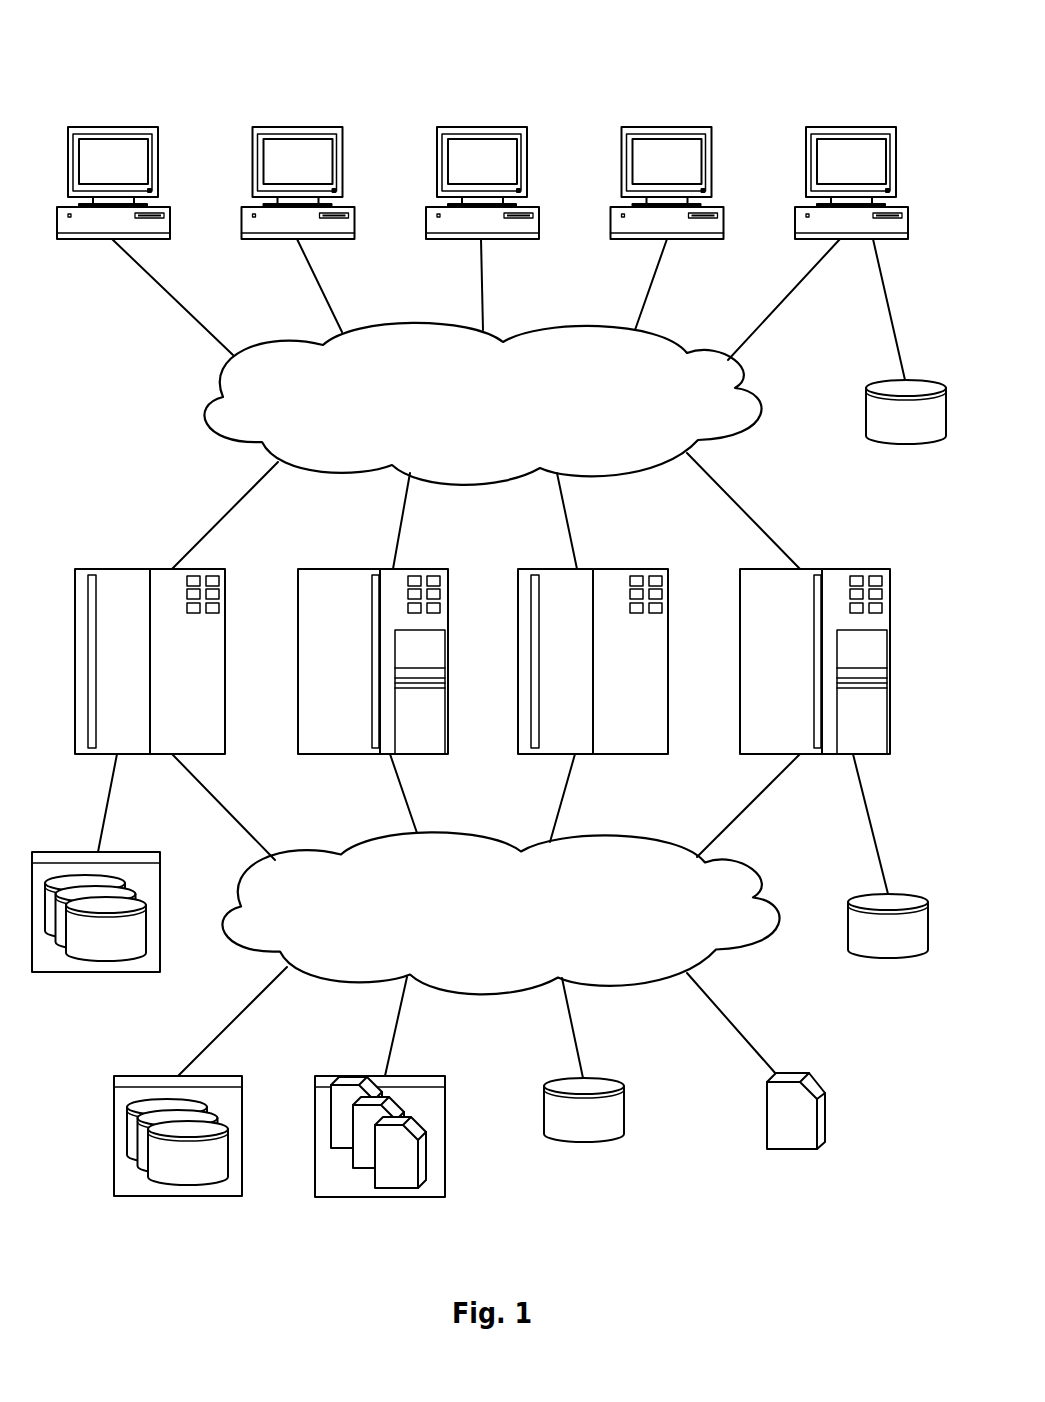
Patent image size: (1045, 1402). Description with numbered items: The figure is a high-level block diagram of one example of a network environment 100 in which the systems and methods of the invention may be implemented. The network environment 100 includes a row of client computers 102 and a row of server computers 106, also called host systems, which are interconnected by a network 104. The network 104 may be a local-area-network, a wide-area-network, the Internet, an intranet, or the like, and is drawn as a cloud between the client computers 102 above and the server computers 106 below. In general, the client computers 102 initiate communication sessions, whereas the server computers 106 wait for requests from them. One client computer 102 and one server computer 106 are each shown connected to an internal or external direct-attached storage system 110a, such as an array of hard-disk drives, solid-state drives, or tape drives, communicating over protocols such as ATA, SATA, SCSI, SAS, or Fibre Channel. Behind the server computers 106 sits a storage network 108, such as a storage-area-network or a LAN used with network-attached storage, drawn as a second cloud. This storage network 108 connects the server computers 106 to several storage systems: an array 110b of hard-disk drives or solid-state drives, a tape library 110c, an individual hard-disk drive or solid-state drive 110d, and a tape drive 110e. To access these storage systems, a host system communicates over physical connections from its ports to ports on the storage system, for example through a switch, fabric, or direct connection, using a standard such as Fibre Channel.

The network environment 100 is at (193, 55).
The client computer 102 is at (96, 169).
The network 104 is at (466, 429).
The server computer 106 is at (140, 669).
The storage network 108 is at (484, 939).
The direct-attached storage system 110a is at (907, 442).
The array of hard-disk drives or solid-state drives 110b is at (178, 1197).
The tape library 110c is at (380, 1197).
The individual hard-disk drive or solid-state drive 110d is at (582, 1142).
The tape drive 110e is at (790, 1149).